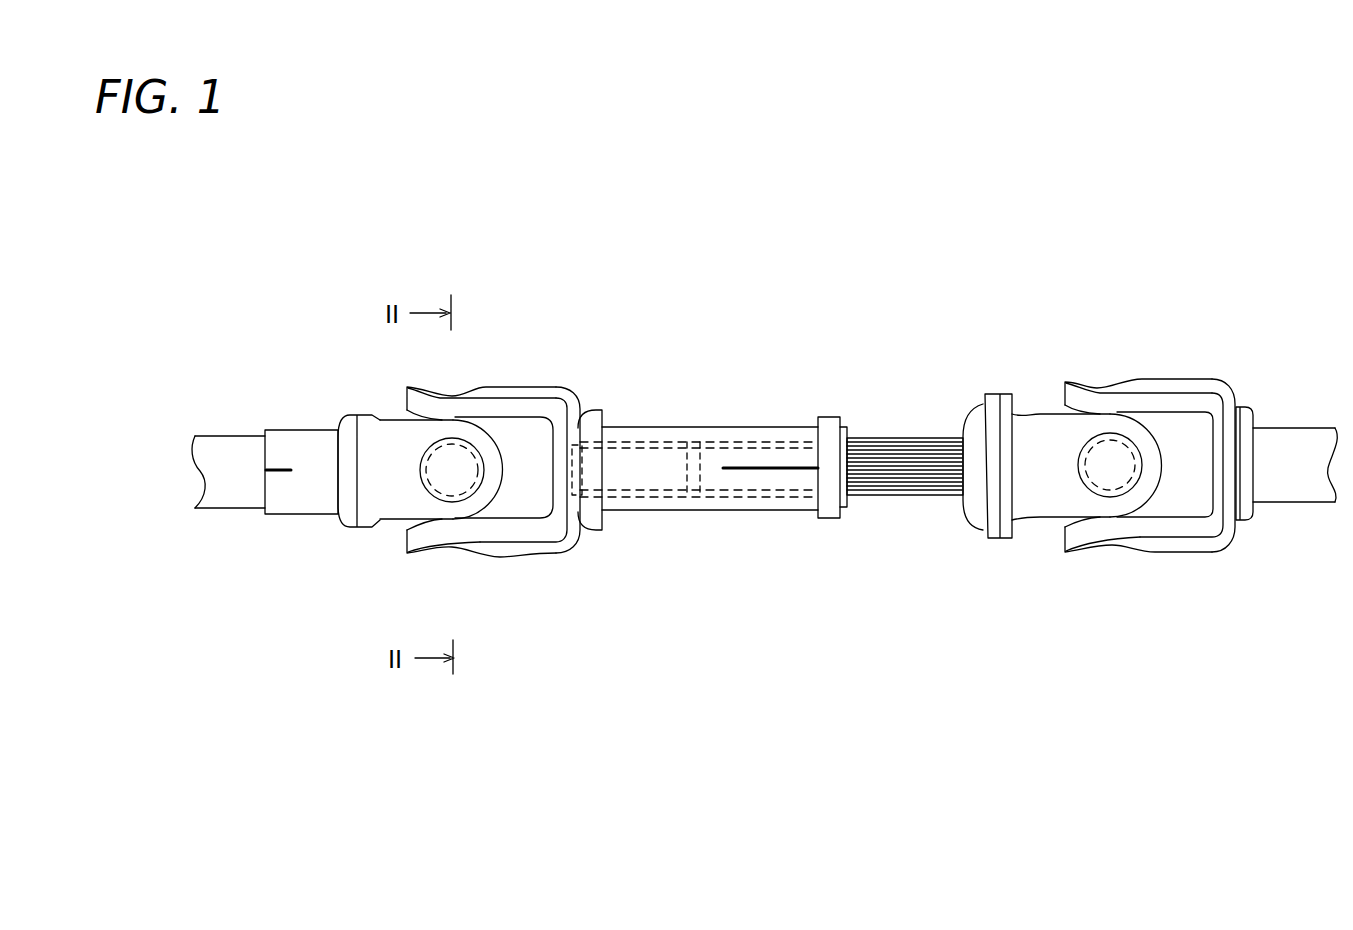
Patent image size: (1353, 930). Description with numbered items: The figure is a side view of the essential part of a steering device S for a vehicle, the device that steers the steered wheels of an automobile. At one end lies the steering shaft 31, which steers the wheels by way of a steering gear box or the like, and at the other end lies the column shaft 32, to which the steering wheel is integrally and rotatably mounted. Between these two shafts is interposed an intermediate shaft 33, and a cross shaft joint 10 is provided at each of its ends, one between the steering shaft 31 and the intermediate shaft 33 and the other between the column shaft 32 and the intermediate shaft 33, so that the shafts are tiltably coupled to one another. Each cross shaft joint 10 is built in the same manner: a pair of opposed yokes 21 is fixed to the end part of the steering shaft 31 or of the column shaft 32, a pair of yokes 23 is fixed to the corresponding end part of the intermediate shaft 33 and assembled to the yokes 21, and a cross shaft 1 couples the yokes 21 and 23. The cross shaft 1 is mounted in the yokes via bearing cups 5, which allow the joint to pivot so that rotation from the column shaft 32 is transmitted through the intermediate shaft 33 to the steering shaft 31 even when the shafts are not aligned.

The steering device S is at (992, 253).
The cross shaft 1 is at (427, 450).
The bearing cup 5 is at (475, 493).
The cross shaft joint 10 is at (568, 542).
The yoke 21 is at (392, 443).
The yoke 23 is at (514, 402).
The steering shaft 31 is at (233, 453).
The column shaft 32 is at (1294, 490).
The intermediate shaft 33 is at (650, 427).